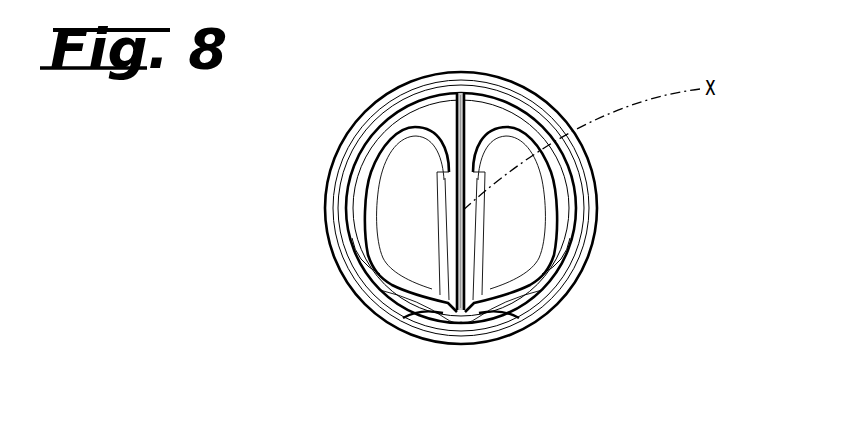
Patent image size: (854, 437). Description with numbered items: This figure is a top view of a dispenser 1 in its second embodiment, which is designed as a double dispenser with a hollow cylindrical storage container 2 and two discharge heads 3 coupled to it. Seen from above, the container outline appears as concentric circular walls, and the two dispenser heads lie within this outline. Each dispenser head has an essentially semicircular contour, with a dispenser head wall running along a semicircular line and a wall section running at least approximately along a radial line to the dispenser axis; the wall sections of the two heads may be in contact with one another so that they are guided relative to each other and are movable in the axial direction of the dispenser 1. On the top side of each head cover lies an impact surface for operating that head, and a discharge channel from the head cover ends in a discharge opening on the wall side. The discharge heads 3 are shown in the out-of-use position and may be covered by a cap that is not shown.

The dispenser 1 is at (583, 88).
The storage container 2 is at (593, 172).
The discharge head 3 is at (365, 88).